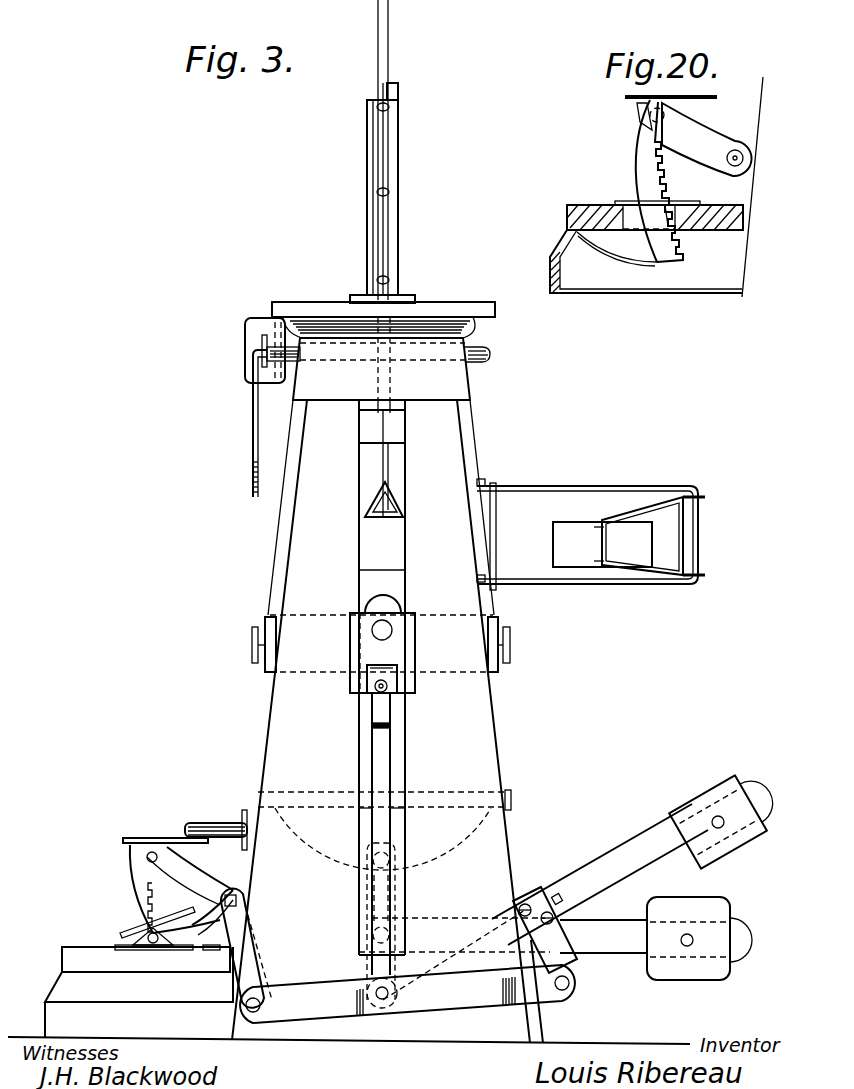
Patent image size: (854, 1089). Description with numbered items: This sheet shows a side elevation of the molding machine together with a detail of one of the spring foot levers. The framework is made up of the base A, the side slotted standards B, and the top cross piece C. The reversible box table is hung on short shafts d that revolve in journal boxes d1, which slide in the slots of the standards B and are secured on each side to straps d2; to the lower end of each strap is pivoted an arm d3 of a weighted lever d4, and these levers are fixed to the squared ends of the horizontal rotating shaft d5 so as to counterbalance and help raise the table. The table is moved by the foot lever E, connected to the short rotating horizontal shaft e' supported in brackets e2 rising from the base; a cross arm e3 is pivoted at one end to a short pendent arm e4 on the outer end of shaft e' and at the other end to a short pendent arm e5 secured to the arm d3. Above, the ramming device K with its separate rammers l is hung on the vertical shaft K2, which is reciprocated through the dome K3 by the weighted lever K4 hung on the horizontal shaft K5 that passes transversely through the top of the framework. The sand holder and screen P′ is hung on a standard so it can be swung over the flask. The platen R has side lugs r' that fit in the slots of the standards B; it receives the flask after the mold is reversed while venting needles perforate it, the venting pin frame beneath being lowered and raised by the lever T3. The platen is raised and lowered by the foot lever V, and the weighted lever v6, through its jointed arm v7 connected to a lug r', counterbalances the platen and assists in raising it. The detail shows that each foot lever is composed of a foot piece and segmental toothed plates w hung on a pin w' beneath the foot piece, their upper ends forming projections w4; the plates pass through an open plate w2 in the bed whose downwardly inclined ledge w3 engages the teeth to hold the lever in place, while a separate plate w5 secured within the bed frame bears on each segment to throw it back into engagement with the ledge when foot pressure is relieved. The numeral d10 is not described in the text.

In FIG. 3, the vertical shaft K2 is at (410, 50).
In FIG. 3, the dome K3 is at (410, 165).
In FIG. 3, the weighted lever K4 is at (262, 342).
In FIG. 3, the horizontal shaft K5 is at (490, 354).
In FIG. 3, the top cross piece C is at (457, 386).
In FIG. 3, the ramming device K is at (405, 430).
In FIG. 3, the rammer l is at (393, 495).
In FIG. 3, the side slotted standard B is at (387, 721).
In FIG. 3, the sand holder and screen P′ is at (591, 534).
In FIG. 3, the short shaft d is at (375, 630).
In FIG. 3, the journal box d1 is at (415, 650).
In FIG. 3, the adjusting screws d10 is at (252, 647).
In FIG. 3, the strap d2 is at (385, 782).
In FIG. 3, the platen R is at (508, 790).
In FIG. 3, the side lug r' is at (404, 904).
In FIG. 3, the jointed arm v7 is at (372, 905).
In FIG. 3, the cross arm e3 is at (440, 1004).
In FIG. 3, the short rotating horizontal shaft e' is at (246, 943).
In FIG. 20, the short rotating horizontal shaft e' is at (750, 187).
In FIG. 3, the short pendent arm e4 is at (258, 960).
In FIG. 3, the foot lever V is at (168, 828).
In FIG. 3, the foot lever E is at (120, 928).
In FIG. 3, the bracket e2 is at (210, 950).
In FIG. 3, the lever T3 is at (235, 820).
In FIG. 3, the base A is at (105, 1031).
In FIG. 20, the base A is at (560, 240).
In FIG. 3, the arm d3 is at (620, 862).
In FIG. 3, the weighted lever d4 is at (725, 790).
In FIG. 3, the horizontal rotating shaft d5 is at (562, 900).
In FIG. 3, the short pendent arm e5 is at (572, 960).
In FIG. 3, the weighted lever v6 is at (682, 938).
In FIG. 20, the projection w4 is at (680, 106).
In FIG. 20, the pin w' is at (632, 116).
In FIG. 20, the segmental toothed plate w is at (639, 181).
In FIG. 20, the downwardly inclined ledge w3 is at (672, 200).
In FIG. 20, the open plate w2 is at (690, 201).
In FIG. 20, the separate plate w5 is at (635, 258).